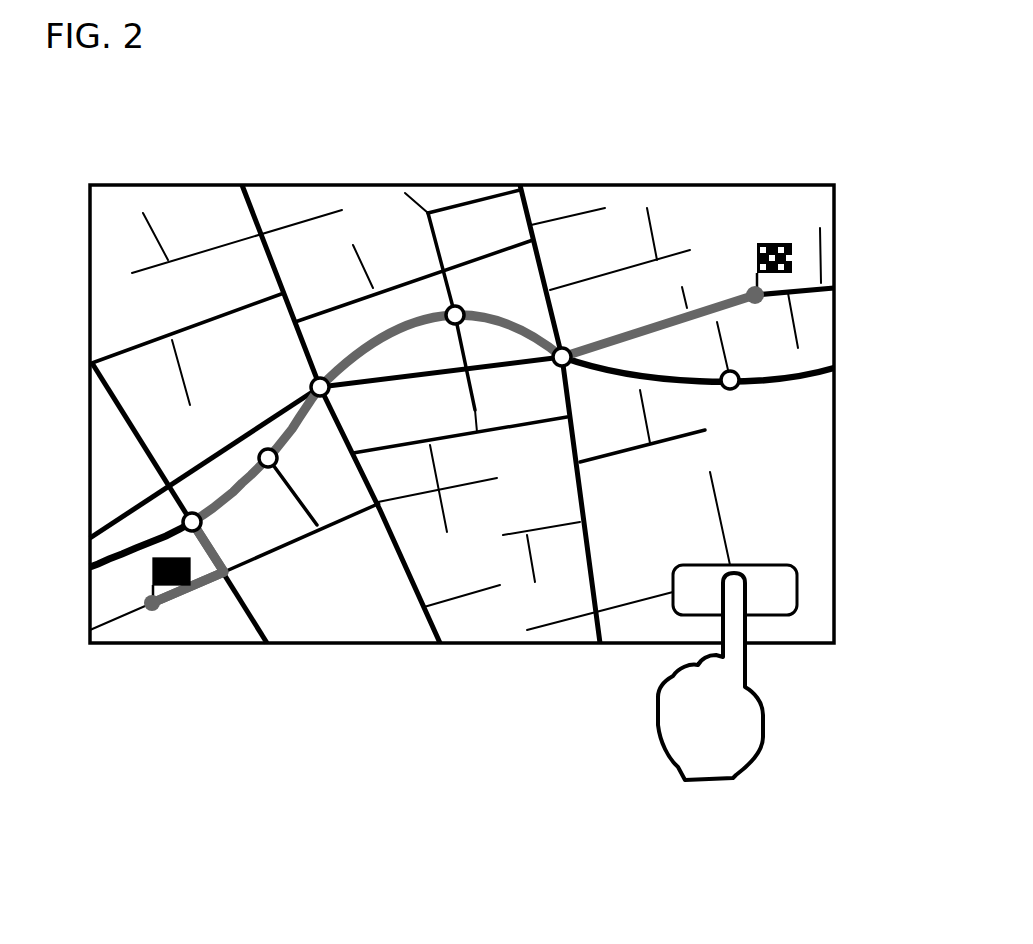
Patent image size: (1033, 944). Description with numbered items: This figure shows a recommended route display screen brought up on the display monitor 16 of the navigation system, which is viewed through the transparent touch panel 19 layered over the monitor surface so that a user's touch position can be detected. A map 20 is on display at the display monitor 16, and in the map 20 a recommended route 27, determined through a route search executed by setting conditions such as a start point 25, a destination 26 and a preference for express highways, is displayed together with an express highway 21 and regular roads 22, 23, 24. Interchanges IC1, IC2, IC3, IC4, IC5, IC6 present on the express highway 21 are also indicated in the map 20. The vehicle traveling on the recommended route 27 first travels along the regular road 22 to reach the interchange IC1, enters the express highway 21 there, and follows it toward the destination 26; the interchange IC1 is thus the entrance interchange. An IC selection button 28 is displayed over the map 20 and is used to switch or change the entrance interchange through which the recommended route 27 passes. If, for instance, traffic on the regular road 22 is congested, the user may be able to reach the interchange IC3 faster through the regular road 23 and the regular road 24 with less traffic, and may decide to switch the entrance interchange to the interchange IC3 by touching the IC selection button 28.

The display monitor 16 is at (463, 362).
The touch panel 19 is at (718, 154).
The map 20 is at (812, 268).
The express highway 21 is at (147, 538).
The regular road 22 is at (210, 548).
The regular road 23 is at (283, 550).
The regular road 24 is at (370, 472).
The start point 25 is at (152, 602).
The destination 26 is at (749, 287).
The recommended route 27 is at (400, 327).
The IC selection button 28 is at (790, 592).
The interchange IC1 is at (192, 511).
The interchange IC2 is at (268, 448).
The interchange IC3 is at (325, 376).
The interchange IC4 is at (466, 307).
The interchange IC5 is at (572, 340).
The interchange IC6 is at (736, 391).